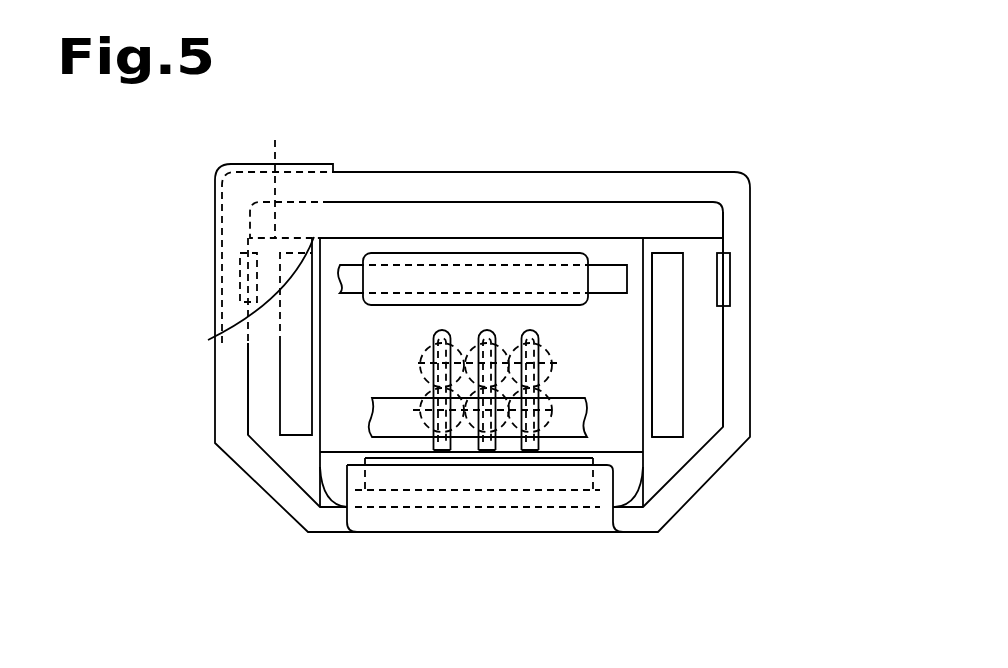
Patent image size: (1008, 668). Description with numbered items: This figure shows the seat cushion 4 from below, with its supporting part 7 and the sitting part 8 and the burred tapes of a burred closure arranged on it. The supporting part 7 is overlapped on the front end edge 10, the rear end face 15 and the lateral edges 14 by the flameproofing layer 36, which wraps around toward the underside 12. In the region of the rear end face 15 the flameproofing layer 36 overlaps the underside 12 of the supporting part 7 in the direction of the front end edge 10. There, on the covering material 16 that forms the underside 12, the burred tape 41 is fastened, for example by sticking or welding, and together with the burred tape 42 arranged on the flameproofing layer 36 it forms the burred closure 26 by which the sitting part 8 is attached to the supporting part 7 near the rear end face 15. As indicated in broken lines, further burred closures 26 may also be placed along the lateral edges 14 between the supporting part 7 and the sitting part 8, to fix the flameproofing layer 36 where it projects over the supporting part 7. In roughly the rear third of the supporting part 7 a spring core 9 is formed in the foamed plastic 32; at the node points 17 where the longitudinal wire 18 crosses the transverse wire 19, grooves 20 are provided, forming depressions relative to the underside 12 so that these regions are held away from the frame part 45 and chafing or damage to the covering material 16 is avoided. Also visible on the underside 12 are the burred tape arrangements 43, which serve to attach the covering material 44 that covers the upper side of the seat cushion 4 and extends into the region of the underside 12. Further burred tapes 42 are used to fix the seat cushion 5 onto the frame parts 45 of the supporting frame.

The seat cushion 4 is at (742, 158).
The seat cushion 5 is at (518, 249).
The supporting part 7 is at (703, 328).
The sitting part 8 is at (306, 198).
The spring core 9 is at (425, 441).
The front end edge 10 is at (388, 200).
The underside 12 is at (697, 258).
The lateral edges 14 is at (725, 353).
The rear end face 15 is at (380, 508).
The covering material 16 is at (703, 372).
The node points 17 is at (516, 426).
The longitudinal wire 18 is at (534, 379).
The transverse wire 19 is at (417, 366).
The grooves 20 is at (443, 448).
The burred closure 26 is at (232, 265).
The foamed plastic 32 is at (356, 385).
The flameproofing layer 36 is at (510, 183).
The burred tape 41 is at (372, 462).
The burred tape 42 is at (425, 262).
The burred tape arrangements 43 is at (275, 237).
The covering material 44 is at (281, 232).
The frame parts 45 is at (457, 258).